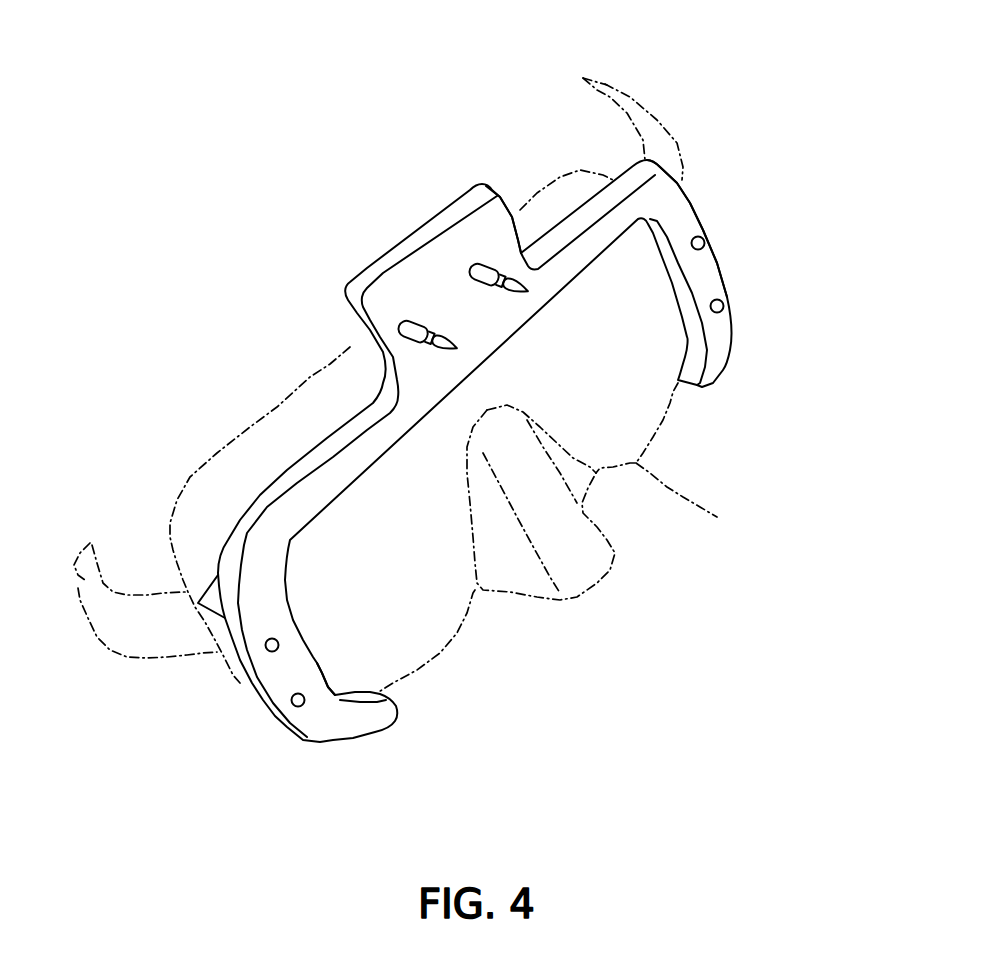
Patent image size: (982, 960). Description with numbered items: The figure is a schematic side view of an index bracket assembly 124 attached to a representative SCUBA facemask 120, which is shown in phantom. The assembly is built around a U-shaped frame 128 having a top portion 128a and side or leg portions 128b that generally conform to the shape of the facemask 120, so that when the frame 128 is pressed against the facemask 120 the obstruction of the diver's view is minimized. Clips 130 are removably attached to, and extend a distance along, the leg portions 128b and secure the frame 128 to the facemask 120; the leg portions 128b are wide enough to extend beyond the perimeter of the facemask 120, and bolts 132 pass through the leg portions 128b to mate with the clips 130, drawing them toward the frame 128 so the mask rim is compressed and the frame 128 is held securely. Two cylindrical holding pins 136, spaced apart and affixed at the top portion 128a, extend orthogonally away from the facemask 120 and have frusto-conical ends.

The SCUBA facemask 120 is at (433, 385).
The index bracket assembly 124 is at (742, 87).
The U-shaped frame 128 is at (318, 435).
The top portion 128a is at (580, 207).
The side portions 128b is at (700, 214).
The clips 130 is at (207, 585).
The bolts 132 is at (705, 246).
The holding pins 136 is at (477, 263).